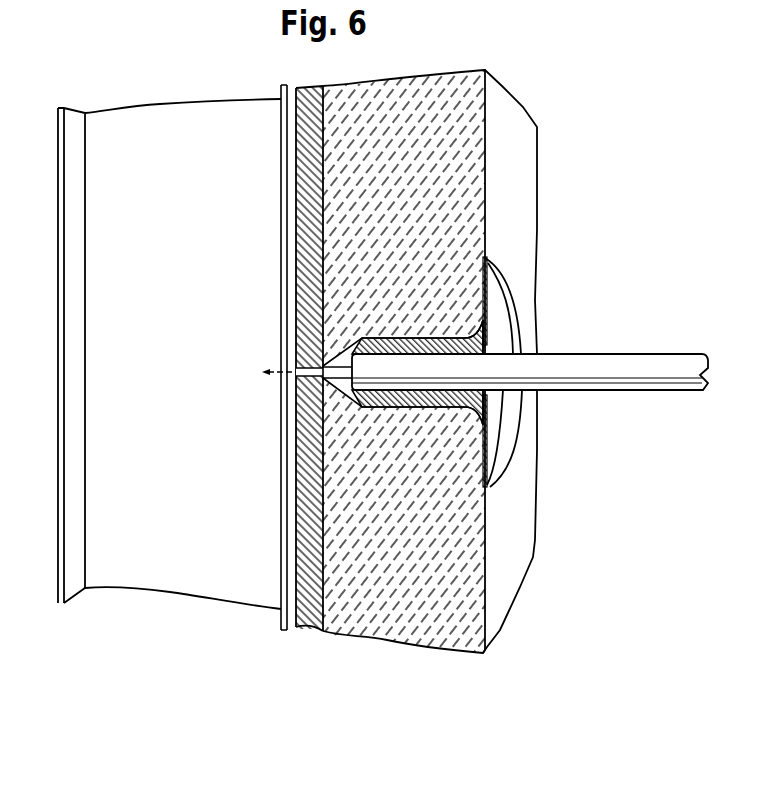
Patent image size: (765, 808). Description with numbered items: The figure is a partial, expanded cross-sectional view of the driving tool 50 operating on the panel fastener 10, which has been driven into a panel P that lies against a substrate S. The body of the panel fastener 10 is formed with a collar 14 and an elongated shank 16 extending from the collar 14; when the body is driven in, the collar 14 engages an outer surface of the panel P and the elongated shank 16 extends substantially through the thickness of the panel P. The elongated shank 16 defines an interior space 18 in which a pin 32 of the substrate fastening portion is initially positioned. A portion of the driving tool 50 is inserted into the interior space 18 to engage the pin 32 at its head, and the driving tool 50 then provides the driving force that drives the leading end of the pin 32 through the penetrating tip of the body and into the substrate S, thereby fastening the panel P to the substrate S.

The panel fastener 10 is at (508, 428).
The collar 14 is at (490, 280).
The elongated shank 16 is at (398, 407).
The interior space 18 is at (408, 360).
The pin 32 is at (303, 348).
The driving tool 50 is at (602, 362).
The panel P is at (370, 85).
The substrate S is at (307, 624).